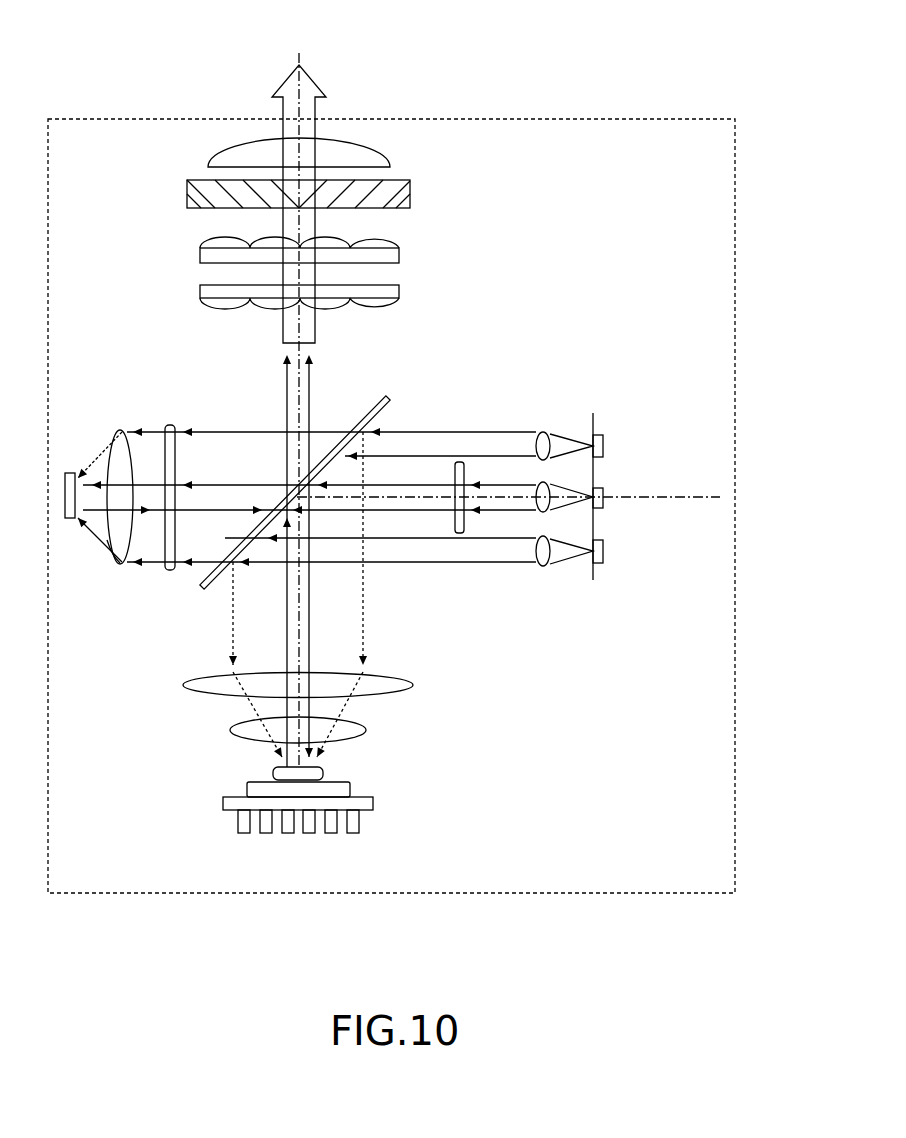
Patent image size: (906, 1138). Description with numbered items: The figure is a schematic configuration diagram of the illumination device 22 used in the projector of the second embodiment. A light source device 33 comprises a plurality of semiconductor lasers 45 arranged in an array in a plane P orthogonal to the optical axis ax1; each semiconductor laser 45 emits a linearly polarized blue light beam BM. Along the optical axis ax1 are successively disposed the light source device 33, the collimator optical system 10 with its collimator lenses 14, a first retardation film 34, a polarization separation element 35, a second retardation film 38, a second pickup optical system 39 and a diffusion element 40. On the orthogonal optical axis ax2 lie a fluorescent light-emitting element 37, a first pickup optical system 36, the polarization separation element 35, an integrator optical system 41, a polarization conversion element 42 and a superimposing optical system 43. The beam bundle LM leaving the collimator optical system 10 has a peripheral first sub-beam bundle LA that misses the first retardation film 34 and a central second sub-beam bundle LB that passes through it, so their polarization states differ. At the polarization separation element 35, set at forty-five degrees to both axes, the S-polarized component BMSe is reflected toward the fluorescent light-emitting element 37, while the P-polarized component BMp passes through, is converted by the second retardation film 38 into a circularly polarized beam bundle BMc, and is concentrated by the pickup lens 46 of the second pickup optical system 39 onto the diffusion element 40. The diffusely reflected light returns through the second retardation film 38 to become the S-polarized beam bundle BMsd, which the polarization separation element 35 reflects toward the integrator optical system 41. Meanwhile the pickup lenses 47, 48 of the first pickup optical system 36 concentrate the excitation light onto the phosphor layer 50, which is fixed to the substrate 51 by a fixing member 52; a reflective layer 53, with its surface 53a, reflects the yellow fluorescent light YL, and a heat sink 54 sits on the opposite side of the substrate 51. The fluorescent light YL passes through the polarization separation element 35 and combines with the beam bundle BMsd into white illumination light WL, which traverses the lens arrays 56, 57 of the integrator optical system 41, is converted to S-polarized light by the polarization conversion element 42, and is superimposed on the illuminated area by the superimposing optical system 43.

The illumination device 22 is at (540, 118).
The superimposing optical system 43 is at (373, 150).
The polarization conversion element 42 is at (410, 196).
The integrator optical system 41 is at (365, 250).
The lens array 57 is at (399, 255).
The lens array 56 is at (399, 290).
The second pickup optical system 39 is at (119, 425).
The diffusion element 40 is at (82, 472).
The second retardation film 38 is at (169, 425).
The pickup lens 46 is at (115, 560).
The polarization separation element 35 is at (380, 397).
The first retardation film 34 is at (458, 462).
The collimator lens 14 is at (539, 432).
The collimator optical system 10 is at (573, 483).
The light source device 33 is at (628, 467).
The semiconductor laser 45 is at (604, 445).
The pickup lens 47 is at (398, 692).
The pickup lens 48 is at (367, 728).
The first pickup optical system 36 is at (349, 718).
The phosphor layer 50 is at (275, 770).
The substrate 51 is at (248, 790).
The fixing member 52 is at (322, 773).
The reflective layer 53 is at (310, 790).
The package surface 53a is at (302, 785).
The heat sink 54 is at (228, 805).
The fluorescent light-emitting element 37 is at (315, 811).
The illumination light WL is at (280, 107).
The optical axis ax2 is at (308, 57).
The optical axis ax1 is at (695, 496).
The fluorescent light YL is at (287, 420).
The S-polarized beam bundle BMsd is at (312, 420).
The S-polarized component BMSe is at (312, 652).
The circularly polarized beam bundle BMc is at (148, 482).
The P-polarized component BMp is at (240, 482).
The light beam BM is at (575, 440).
The first sub-beam bundle LA is at (490, 440).
The second sub-beam bundle LB is at (488, 503).
The beam bundle LM is at (512, 555).
The plane P is at (596, 585).